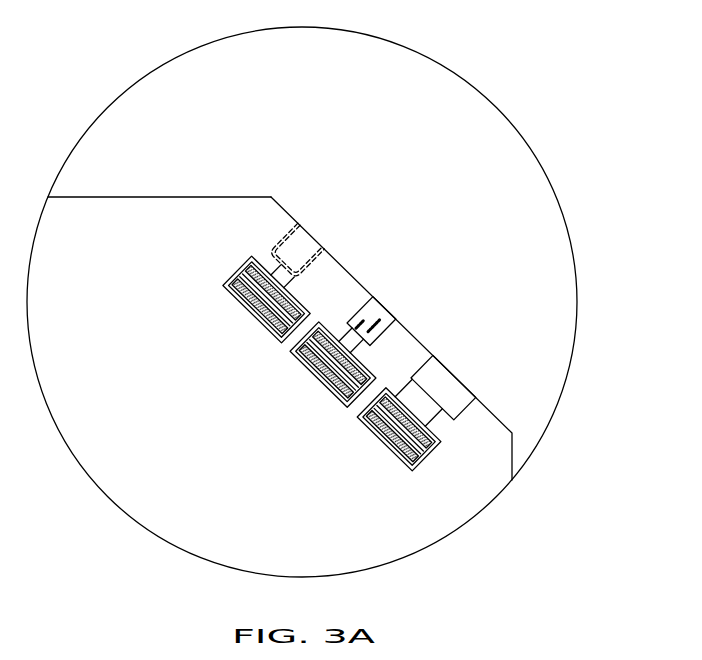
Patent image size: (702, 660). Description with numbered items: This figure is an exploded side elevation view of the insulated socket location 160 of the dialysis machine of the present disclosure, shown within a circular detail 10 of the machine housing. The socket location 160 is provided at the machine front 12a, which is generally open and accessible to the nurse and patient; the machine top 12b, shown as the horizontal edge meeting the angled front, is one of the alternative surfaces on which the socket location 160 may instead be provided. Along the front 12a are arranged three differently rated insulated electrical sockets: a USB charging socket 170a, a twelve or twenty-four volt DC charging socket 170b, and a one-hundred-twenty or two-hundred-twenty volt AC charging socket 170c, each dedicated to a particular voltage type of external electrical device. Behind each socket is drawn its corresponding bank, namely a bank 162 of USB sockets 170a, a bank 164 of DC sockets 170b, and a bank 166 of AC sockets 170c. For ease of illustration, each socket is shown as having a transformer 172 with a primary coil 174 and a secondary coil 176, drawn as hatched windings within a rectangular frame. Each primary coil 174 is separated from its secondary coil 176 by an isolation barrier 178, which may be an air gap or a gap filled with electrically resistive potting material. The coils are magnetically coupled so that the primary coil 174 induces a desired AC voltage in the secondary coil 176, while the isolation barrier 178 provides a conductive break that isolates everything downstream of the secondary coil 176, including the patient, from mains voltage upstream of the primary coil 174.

The device 10 is at (141, 58).
The machine front 12a is at (284, 208).
The machine top 12b is at (163, 197).
The insulated socket location 160 is at (351, 337).
The bank of USB sockets 162 is at (255, 257).
The bank of 12 VDC or 24 VDC sockets 164 is at (292, 350).
The bank of 120 VAC or 220 VAC sockets 166 is at (436, 470).
The USB socket 170a is at (320, 236).
The 12 VDC or 24 VDC socket 170b is at (384, 310).
The 120 VAC or 220 VAC socket 170c is at (455, 366).
The transformer 172 is at (233, 282).
The primary coil 174 is at (277, 310).
The secondary coil 176 is at (302, 290).
The isolation barrier 178 is at (262, 342).